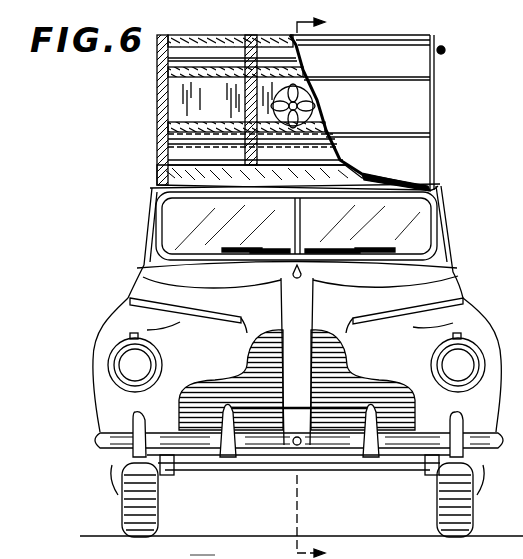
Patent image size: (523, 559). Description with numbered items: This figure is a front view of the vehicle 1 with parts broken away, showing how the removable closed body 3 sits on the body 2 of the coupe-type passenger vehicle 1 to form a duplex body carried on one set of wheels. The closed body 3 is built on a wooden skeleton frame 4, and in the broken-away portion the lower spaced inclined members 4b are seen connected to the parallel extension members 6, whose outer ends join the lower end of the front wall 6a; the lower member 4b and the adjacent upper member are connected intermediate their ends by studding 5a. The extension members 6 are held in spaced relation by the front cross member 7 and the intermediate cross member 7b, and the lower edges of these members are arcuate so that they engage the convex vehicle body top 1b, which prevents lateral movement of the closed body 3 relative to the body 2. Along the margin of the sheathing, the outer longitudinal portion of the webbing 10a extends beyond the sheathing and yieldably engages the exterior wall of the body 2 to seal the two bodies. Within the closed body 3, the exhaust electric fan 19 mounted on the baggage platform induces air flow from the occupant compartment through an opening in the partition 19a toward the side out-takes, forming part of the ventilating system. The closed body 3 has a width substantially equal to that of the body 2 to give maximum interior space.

The passenger vehicle 1 is at (384, 349).
The vehicle body top 1b is at (425, 182).
The body 2 is at (455, 324).
The closed body 3 is at (295, 101).
The skeleton frame 4 is at (321, 285).
The lower spaced inclined members 4b is at (164, 124).
The studding 5a is at (204, 554).
The extension members 6 is at (160, 148).
The front wall 6a is at (420, 112).
The front cross member 7 is at (232, 180).
The intermediate cross member 7b is at (308, 172).
The outer longitudinal portion of webbing 10a is at (440, 196).
The exhaust electric fan 19 is at (291, 62).
The partition 19a is at (178, 98).